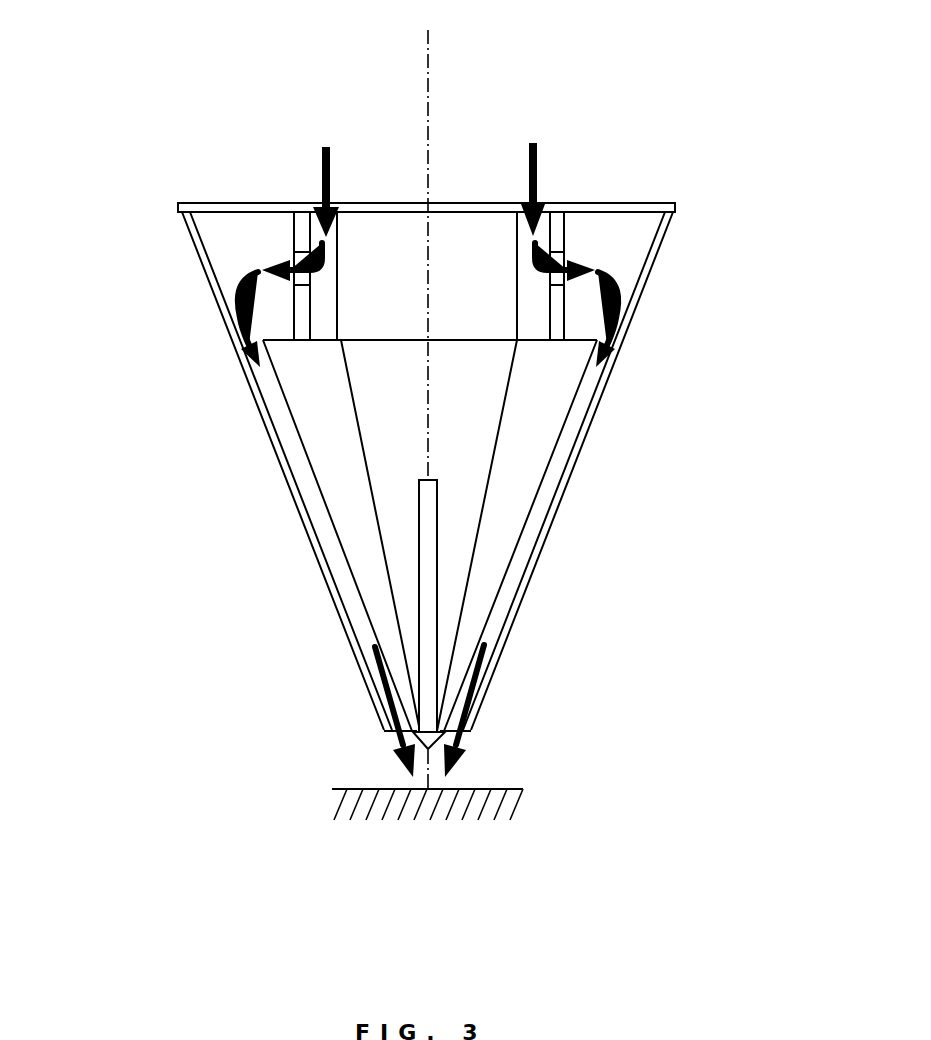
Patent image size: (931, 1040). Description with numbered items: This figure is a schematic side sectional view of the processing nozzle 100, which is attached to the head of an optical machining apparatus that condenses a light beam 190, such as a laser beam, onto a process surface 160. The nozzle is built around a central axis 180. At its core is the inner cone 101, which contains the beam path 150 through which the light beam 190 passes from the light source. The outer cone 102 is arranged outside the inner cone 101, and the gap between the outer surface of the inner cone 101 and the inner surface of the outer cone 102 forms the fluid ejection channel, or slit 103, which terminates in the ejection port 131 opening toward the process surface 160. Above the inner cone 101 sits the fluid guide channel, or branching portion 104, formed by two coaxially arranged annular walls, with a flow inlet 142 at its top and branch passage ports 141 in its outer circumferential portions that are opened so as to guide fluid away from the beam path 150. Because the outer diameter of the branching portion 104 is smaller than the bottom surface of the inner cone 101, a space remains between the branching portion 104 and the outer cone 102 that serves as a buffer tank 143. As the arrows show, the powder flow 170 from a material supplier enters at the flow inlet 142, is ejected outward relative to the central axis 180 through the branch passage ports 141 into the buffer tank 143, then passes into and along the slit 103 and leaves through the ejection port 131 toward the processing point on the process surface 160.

The processing nozzle 100 is at (200, 86).
The inner cone 101 is at (320, 423).
The outer cone 102 is at (245, 358).
The fluid ejection channel (slit) 103 is at (345, 562).
The fluid guide channel (branching portion) 104 is at (297, 253).
The ejection port 131 is at (397, 732).
The branch passage ports 141 is at (297, 265).
The flow inlet 142 is at (313, 227).
The buffer tank 143 is at (230, 249).
The beam path 150 is at (467, 515).
The process surface 160 is at (503, 782).
The powder flow 170 is at (326, 183).
The central axis 180 is at (432, 74).
The light beam 190 is at (440, 615).